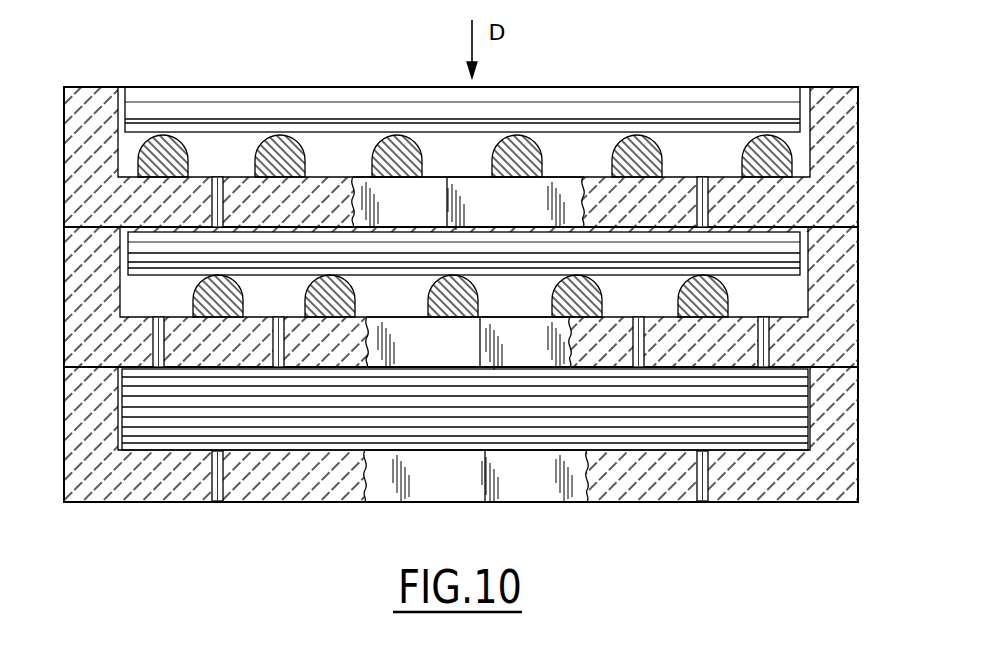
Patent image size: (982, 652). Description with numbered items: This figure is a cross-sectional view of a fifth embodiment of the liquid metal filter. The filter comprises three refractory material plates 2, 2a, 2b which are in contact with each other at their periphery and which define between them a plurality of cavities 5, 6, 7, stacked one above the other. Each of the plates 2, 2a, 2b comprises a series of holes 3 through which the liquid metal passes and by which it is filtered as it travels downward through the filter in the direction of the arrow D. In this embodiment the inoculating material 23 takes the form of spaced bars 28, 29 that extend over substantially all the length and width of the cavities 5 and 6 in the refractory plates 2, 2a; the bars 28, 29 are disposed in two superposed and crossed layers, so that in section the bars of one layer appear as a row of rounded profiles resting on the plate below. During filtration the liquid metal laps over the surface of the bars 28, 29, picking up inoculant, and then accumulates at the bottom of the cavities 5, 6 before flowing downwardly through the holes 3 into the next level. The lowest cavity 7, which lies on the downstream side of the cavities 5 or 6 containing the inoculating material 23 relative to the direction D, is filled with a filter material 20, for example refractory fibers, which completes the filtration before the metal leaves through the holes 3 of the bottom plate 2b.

The refractory material plate 2 is at (843, 180).
The refractory material plate 2a is at (840, 330).
The refractory material plate 2b is at (830, 467).
The holes 3 is at (703, 200).
The cavity 5 is at (335, 158).
The cavity 6 is at (145, 292).
The cavity 7 is at (150, 432).
The filter material 20 is at (643, 420).
The inoculating material 23 is at (544, 101).
The bars 28 is at (190, 158).
The bars 29 is at (373, 107).